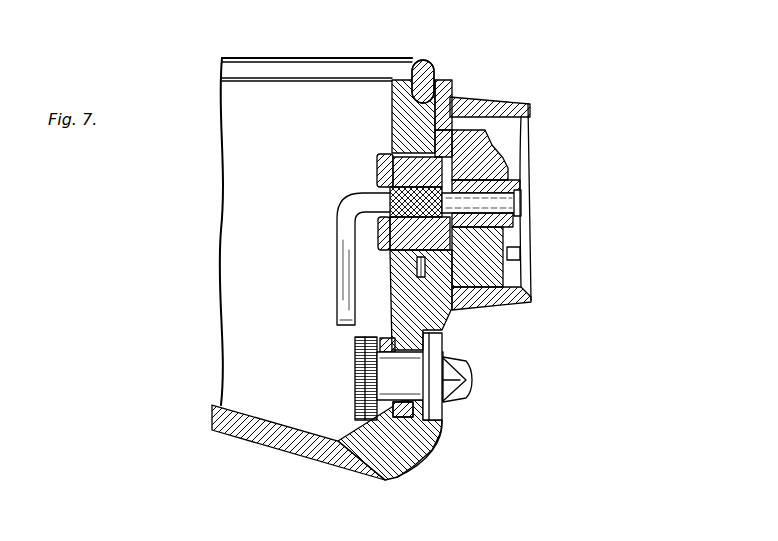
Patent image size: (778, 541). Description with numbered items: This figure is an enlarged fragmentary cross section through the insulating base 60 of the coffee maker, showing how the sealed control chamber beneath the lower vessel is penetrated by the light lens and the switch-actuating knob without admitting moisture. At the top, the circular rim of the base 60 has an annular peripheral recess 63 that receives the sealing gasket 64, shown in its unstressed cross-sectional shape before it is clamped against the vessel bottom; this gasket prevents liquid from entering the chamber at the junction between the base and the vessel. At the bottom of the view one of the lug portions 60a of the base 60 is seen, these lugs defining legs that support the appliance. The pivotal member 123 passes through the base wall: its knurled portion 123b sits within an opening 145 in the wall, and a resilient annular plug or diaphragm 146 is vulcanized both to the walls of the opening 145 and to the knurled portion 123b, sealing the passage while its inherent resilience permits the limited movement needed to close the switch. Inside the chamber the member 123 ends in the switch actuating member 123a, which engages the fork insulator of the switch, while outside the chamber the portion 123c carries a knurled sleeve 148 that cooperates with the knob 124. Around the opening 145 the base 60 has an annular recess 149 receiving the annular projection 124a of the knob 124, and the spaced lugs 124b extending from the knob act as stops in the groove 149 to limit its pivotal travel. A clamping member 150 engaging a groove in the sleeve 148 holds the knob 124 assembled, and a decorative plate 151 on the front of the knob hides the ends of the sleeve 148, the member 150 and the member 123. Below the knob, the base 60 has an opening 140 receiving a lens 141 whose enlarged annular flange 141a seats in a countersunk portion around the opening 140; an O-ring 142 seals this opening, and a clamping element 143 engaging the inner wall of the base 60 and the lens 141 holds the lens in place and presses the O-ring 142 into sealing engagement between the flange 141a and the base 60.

The insulating base 60 is at (243, 430).
The lug portions 60a is at (387, 480).
The annular peripheral recess 63 is at (435, 78).
The sealing gasket 64 is at (421, 62).
The pivotal member 123 is at (338, 216).
The switch actuating member 123a is at (343, 317).
The knurled portion 123b is at (392, 194).
The outer portion of pivotal member 123c is at (498, 202).
The knob 124 is at (497, 295).
The annular projection 124a is at (452, 99).
The spaced lugs 124b is at (390, 262).
The opening 140 is at (423, 445).
The lens 141 is at (447, 374).
The annular flange 141a is at (450, 398).
The O-ring 142 is at (442, 331).
The clamping element 143 is at (374, 429).
The opening 145 is at (410, 140).
The resilient diaphragm 146 is at (377, 161).
The knurled sleeve 148 is at (497, 158).
The annular recess 149 is at (419, 277).
The clamping member 150 is at (505, 230).
The decorative plate 151 is at (531, 173).